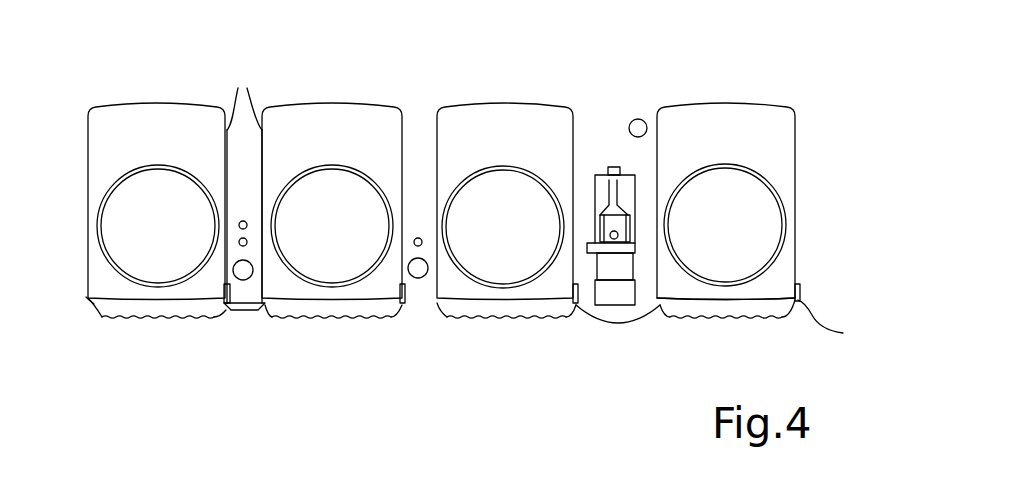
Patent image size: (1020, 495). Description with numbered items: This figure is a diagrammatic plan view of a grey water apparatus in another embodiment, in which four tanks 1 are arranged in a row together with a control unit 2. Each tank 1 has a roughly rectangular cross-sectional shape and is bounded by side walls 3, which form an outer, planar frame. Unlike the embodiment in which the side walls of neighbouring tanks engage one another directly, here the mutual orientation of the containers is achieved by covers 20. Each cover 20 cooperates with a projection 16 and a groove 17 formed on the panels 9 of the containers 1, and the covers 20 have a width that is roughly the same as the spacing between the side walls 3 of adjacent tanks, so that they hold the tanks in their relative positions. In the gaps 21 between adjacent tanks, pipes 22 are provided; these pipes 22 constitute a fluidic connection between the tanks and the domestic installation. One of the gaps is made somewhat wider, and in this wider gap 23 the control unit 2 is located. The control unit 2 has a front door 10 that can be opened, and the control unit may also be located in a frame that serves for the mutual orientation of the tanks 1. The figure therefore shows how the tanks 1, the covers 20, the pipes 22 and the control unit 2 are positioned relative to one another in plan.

The tank 1 is at (197, 128).
The control unit 2 is at (662, 334).
The side wall 3 is at (243, 181).
The panel 9 is at (155, 320).
The front door 10 is at (612, 312).
The projection 16 is at (834, 315).
The groove 17 is at (92, 303).
The cover 20 is at (242, 308).
The gap 21 is at (415, 127).
The pipe 22 is at (418, 278).
The wider gap 23 is at (600, 127).